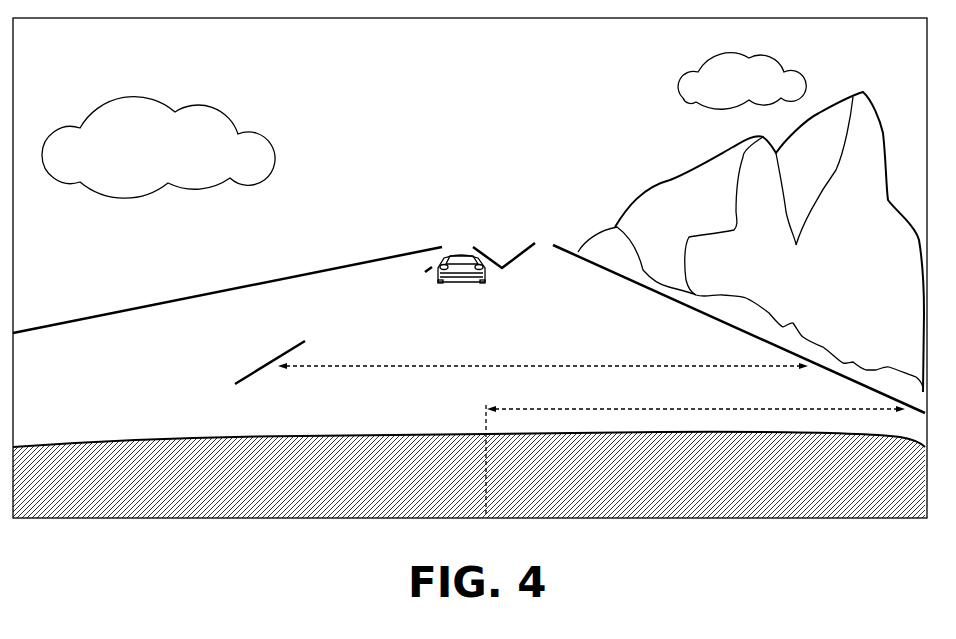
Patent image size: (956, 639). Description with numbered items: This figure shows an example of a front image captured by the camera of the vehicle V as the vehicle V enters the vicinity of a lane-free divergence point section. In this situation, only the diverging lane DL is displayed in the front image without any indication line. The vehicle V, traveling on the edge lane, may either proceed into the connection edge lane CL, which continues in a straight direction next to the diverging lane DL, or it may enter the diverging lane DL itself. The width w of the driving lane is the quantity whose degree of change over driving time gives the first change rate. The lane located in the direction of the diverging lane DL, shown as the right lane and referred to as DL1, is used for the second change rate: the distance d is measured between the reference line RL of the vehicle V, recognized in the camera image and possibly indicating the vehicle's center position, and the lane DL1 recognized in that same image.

The connection edge lane CL is at (463, 236).
The diverging lane DL is at (544, 236).
The lane located in the direction of the diverging lane DL1 is at (568, 250).
The vehicle V is at (148, 435).
The reference line RL is at (488, 485).
The width of the driving lane w is at (543, 353).
The distance d is at (696, 395).